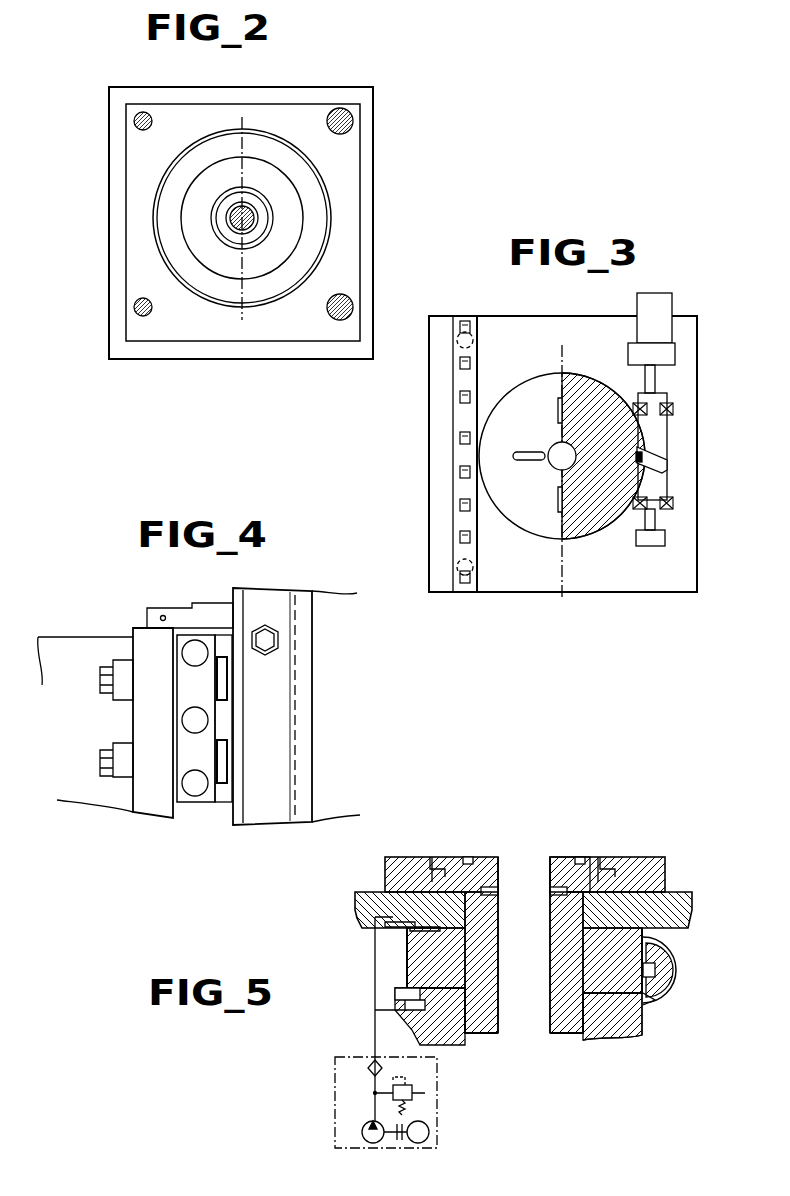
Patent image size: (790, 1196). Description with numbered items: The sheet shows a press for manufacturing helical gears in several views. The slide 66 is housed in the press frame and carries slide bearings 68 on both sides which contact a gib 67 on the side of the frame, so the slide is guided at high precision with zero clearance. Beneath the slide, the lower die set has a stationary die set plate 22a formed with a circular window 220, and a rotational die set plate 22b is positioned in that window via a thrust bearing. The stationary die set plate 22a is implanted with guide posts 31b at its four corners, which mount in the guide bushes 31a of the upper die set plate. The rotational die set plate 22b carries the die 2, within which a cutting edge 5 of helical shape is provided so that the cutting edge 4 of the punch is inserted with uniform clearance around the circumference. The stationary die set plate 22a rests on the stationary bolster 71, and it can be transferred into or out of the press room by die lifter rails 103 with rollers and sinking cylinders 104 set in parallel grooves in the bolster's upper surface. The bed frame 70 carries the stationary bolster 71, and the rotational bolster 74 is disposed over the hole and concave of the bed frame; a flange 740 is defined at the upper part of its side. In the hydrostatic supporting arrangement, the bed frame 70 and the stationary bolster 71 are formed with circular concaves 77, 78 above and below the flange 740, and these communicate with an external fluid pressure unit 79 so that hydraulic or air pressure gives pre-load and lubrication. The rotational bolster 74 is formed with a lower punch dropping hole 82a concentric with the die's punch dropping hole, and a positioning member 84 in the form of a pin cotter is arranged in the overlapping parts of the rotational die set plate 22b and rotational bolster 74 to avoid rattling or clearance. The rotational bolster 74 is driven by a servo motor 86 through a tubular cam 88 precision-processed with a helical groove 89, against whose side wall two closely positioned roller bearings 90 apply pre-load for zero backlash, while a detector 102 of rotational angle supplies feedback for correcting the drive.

In FIG. 2, the die 2 is at (205, 187).
In FIG. 2, the cutting edge of the punch 4 is at (258, 218).
In FIG. 2, the cutting edge of helical shape 5 is at (230, 205).
In FIG. 2, the stationary die set plate 22a is at (141, 241).
In FIG. 5, the stationary die set plate 22a is at (655, 870).
In FIG. 2, the rotational die set plate 22b is at (188, 270).
In FIG. 5, the rotational die set plate 22b is at (603, 857).
In FIG. 2, the window 220 is at (163, 262).
In FIG. 5, the window 220 is at (460, 872).
In FIG. 2, the guide bushes 31a is at (343, 108).
In FIG. 2, the guide posts 31b is at (134, 121).
In FIG. 4, the slide 66 is at (78, 652).
In FIG. 4, the gib 67 is at (275, 610).
In FIG. 4, the slide bearings 68 is at (223, 729).
In FIG. 5, the bed frame 70 is at (620, 1020).
In FIG. 2, the stationary bolster 71 is at (113, 196).
In FIG. 5, the stationary bolster 71 is at (675, 906).
In FIG. 3, the rotational bolster 74 is at (590, 500).
In FIG. 5, the rotational bolster 74 is at (575, 1012).
In FIG. 5, the circular concave 77 is at (427, 930).
In FIG. 5, the circular concave 78 is at (425, 982).
In FIG. 5, the external fluid pressure unit 79 is at (335, 1113).
In FIG. 3, the lower punch dropping hole 82a is at (570, 444).
In FIG. 5, the lower punch dropping hole 82a is at (505, 1010).
In FIG. 3, the positioning member 84 is at (533, 450).
In FIG. 5, the positioning member 84 is at (560, 860).
In FIG. 3, the servo motor 86 is at (658, 313).
In FIG. 3, the tubular cam 88 is at (655, 435).
In FIG. 5, the tubular cam 88 is at (672, 975).
In FIG. 3, the helical groove 89 is at (665, 460).
In FIG. 5, the helical groove 89 is at (670, 1000).
In FIG. 3, the roller bearings 90 is at (645, 466).
In FIG. 5, the roller bearings 90 is at (660, 960).
In FIG. 3, the detector of rotational angle 102 is at (677, 526).
In FIG. 3, the die lifter rails 103 is at (458, 473).
In FIG. 3, the sinking cylinders 104 is at (458, 565).
In FIG. 5, the flange 740 is at (630, 972).